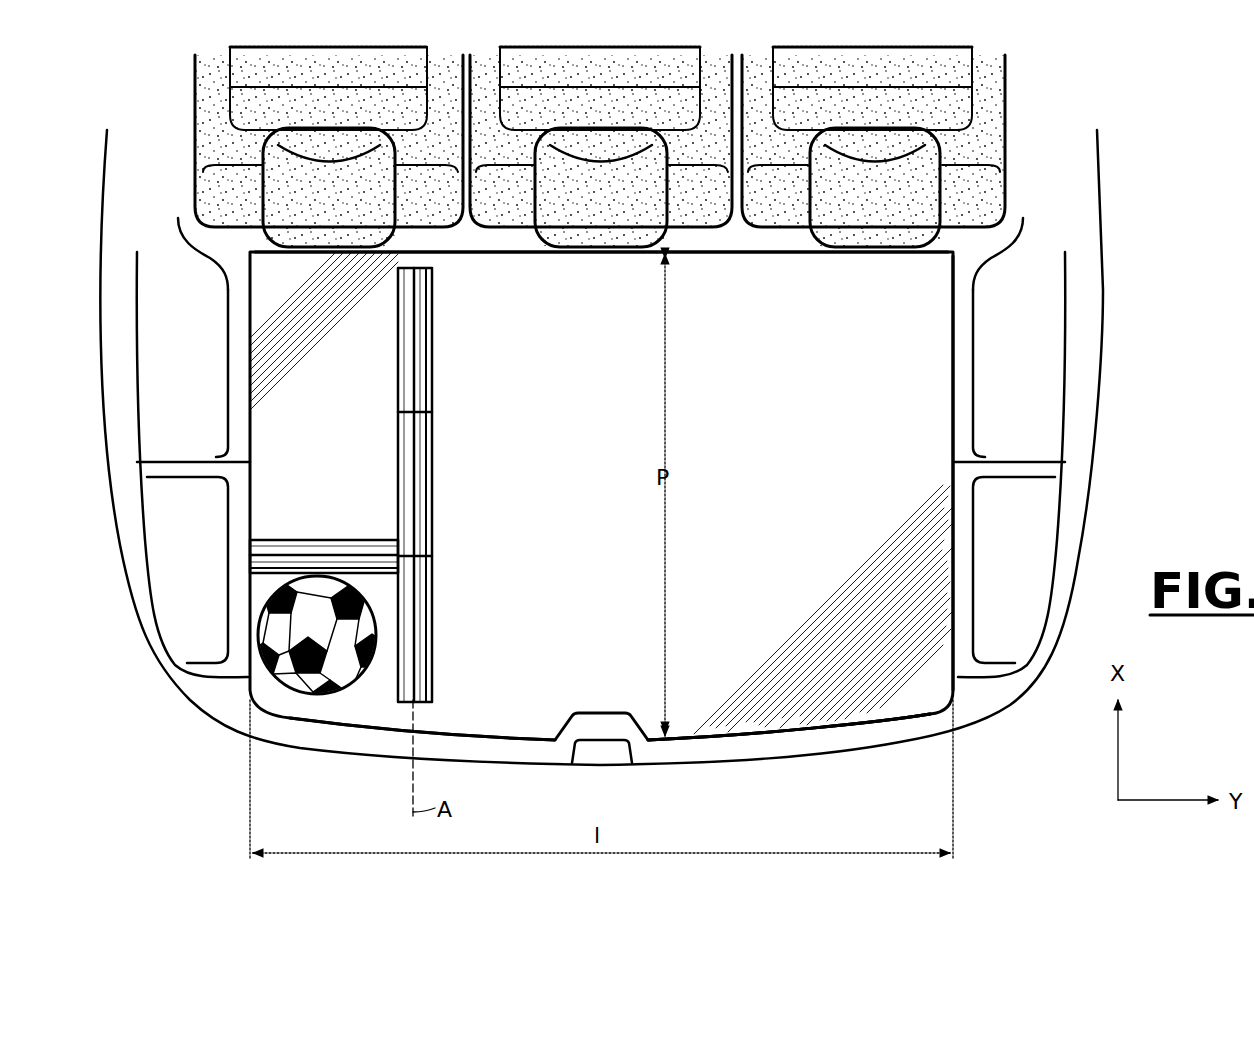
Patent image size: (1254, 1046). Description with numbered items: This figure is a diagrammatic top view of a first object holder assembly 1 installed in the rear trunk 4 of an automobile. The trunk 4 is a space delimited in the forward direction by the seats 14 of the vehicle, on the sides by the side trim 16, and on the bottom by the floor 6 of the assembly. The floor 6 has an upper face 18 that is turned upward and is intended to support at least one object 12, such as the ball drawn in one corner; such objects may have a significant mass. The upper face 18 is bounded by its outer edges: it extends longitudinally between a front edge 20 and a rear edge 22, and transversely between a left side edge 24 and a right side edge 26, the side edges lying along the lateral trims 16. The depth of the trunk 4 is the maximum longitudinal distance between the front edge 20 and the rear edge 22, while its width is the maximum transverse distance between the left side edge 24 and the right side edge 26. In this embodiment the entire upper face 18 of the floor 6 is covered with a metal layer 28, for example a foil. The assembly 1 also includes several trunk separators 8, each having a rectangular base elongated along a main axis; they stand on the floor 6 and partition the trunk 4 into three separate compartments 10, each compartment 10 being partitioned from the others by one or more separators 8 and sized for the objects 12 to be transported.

The first object holder assembly 1 is at (478, 700).
The rear trunk 4 is at (958, 278).
The floor 6 is at (797, 697).
The trunk separator 8 is at (294, 530).
The partitioned compartment 10 is at (601, 480).
The object 12 is at (318, 683).
The seats 14 is at (795, 246).
The side trim 16 is at (268, 408).
The upper face 18 is at (906, 360).
The front edge 20 is at (607, 260).
The rear edge 22 is at (718, 730).
The left side edge 24 is at (256, 323).
The right side edge 26 is at (935, 410).
The metal layer 28 is at (862, 676).